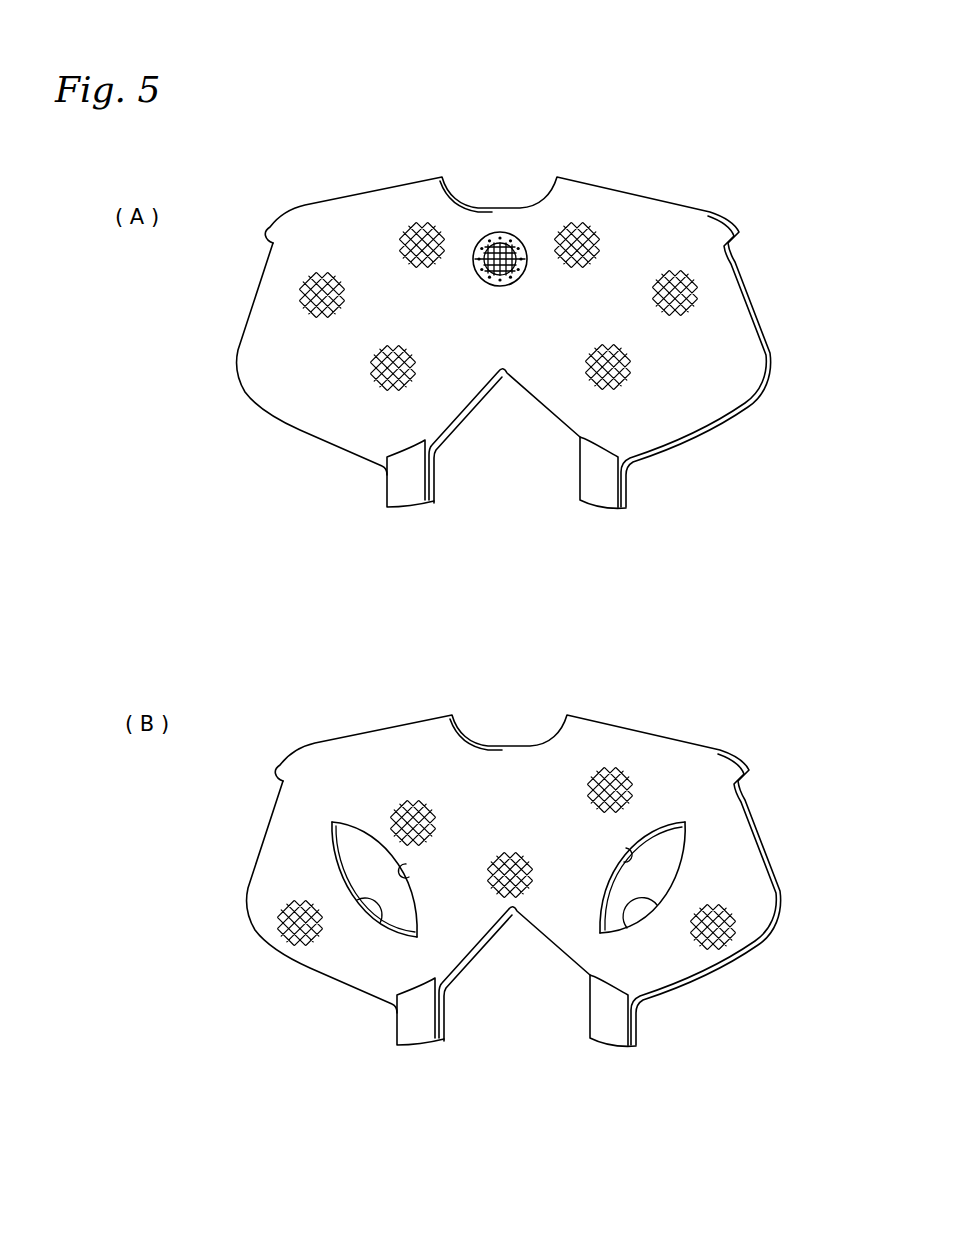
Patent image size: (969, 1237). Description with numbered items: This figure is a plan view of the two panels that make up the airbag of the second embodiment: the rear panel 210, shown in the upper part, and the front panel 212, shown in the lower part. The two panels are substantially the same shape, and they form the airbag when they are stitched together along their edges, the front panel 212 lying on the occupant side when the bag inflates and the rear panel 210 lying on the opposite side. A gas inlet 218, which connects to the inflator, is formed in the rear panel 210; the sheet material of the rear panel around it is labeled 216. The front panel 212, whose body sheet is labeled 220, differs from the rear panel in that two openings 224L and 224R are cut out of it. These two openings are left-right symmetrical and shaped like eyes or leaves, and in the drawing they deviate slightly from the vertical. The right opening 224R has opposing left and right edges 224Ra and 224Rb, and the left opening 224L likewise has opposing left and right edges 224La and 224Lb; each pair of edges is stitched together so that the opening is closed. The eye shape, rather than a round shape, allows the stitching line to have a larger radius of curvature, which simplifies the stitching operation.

The rear panel 210 is at (553, 318).
The mask body sheet 216 is at (300, 417).
The gas inlet 218 is at (481, 236).
The front panel 212 is at (517, 851).
The mask body sheet 220 is at (383, 742).
The left opening 224L is at (338, 932).
The left edge of left opening 224La is at (378, 922).
The right edge of left opening 224Lb is at (454, 848).
The right opening 224R is at (686, 931).
The left edge of right opening 224Ra is at (652, 907).
The right edge of right opening 224Rb is at (580, 844).